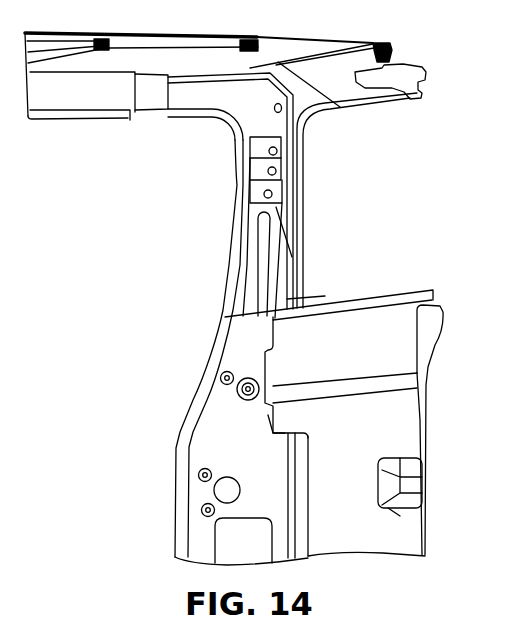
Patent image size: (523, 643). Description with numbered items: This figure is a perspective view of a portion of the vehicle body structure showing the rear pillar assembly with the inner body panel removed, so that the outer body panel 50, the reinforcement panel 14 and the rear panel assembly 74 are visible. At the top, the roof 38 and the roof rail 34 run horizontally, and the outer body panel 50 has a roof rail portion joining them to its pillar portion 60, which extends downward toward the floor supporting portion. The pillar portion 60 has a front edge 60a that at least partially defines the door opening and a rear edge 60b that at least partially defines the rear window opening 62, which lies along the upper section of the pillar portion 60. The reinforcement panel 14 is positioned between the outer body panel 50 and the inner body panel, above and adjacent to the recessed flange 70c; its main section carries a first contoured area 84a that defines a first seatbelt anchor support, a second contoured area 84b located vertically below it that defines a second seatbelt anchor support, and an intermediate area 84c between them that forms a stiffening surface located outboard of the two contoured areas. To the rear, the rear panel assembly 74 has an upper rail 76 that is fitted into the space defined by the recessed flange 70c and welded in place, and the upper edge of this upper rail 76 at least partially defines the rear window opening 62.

The roof 38 is at (278, 47).
The roof rail 34 is at (72, 90).
The outer body panel 50 is at (147, 112).
The pillar portion 60 is at (230, 253).
The front edge 60a is at (229, 289).
The rear edge 60b is at (302, 231).
The first contoured area 84a is at (277, 151).
The second contoured area 84b is at (272, 194).
The intermediate area 84c is at (276, 171).
The reinforcement panel 14 is at (273, 275).
The rear window opening 62 is at (397, 295).
The upper rail 76 is at (427, 325).
The rear panel assembly 74 is at (382, 418).
The recessed flange 70c is at (272, 424).